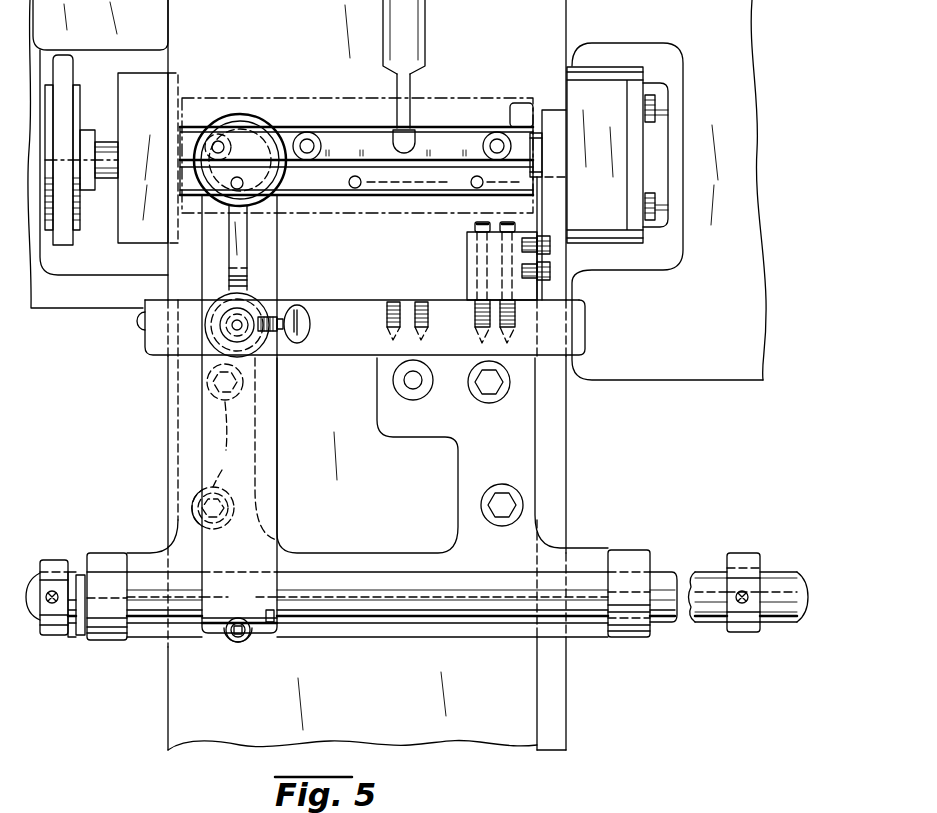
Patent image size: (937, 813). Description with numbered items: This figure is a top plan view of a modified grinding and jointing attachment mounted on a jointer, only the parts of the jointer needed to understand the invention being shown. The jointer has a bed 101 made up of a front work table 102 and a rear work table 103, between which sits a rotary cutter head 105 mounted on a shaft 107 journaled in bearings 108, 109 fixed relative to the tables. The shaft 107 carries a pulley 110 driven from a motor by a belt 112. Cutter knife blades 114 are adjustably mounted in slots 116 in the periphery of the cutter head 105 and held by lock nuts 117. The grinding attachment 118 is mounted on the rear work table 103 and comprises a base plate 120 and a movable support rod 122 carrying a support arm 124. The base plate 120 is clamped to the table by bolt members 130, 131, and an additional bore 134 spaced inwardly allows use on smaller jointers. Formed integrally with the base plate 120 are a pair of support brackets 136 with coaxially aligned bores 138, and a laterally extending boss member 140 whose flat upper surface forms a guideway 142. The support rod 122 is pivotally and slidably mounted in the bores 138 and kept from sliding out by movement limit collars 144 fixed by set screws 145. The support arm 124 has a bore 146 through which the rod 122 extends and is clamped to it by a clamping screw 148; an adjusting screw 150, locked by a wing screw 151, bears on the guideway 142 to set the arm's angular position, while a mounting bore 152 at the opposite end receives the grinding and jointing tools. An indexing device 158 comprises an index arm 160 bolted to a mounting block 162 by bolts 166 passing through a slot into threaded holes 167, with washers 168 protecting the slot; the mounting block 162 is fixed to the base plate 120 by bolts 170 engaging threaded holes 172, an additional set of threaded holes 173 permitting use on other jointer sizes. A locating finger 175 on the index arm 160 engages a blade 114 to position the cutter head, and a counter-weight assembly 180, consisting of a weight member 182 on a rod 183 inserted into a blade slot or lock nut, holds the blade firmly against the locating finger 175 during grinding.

The bed 101 is at (568, 696).
The front work table 102 is at (268, 50).
The rear work table 103 is at (362, 714).
The rotary cutter head 105 is at (358, 116).
The shaft 107 is at (108, 138).
The bearing 108 is at (145, 93).
The bearing 109 is at (600, 85).
The pulley 110 is at (77, 92).
The belt 112 is at (68, 62).
The cutter knife blades 114 is at (317, 168).
The slots 116 is at (345, 168).
The lock nuts 117 is at (310, 132).
The grinding attachment 118 is at (547, 438).
The base plate 120 is at (455, 454).
The support rod 122 is at (470, 580).
The support arm 124 is at (258, 493).
The bolt members 130 is at (484, 382).
The bolt members 131 is at (217, 446).
The additional bore 134 is at (412, 389).
The support brackets 136 is at (113, 553).
The bores 138 is at (112, 630).
The boss member 140 is at (333, 288).
The guideway 142 is at (351, 299).
The movement limit collars 144 is at (62, 560).
The set screws 145 is at (61, 603).
The bore 146 is at (268, 615).
The clamping screw 148 is at (241, 643).
The adjusting screw 150 is at (260, 308).
The wing screw 151 is at (311, 327).
The mounting bore 152 is at (236, 148).
The indexing device 158 is at (466, 252).
The index arm 160 is at (577, 224).
The mounting block 162 is at (493, 266).
The bolts 166 is at (552, 248).
The threaded holes 167 is at (533, 275).
The washers 168 is at (550, 270).
The bolts 170 is at (510, 221).
The threaded holes 172 is at (484, 336).
The additional set of threaded holes 173 is at (421, 341).
The locating finger 175 is at (516, 105).
The counter-weight assembly 180 is at (418, 92).
The weight member 182 is at (423, 48).
The rod 183 is at (412, 106).